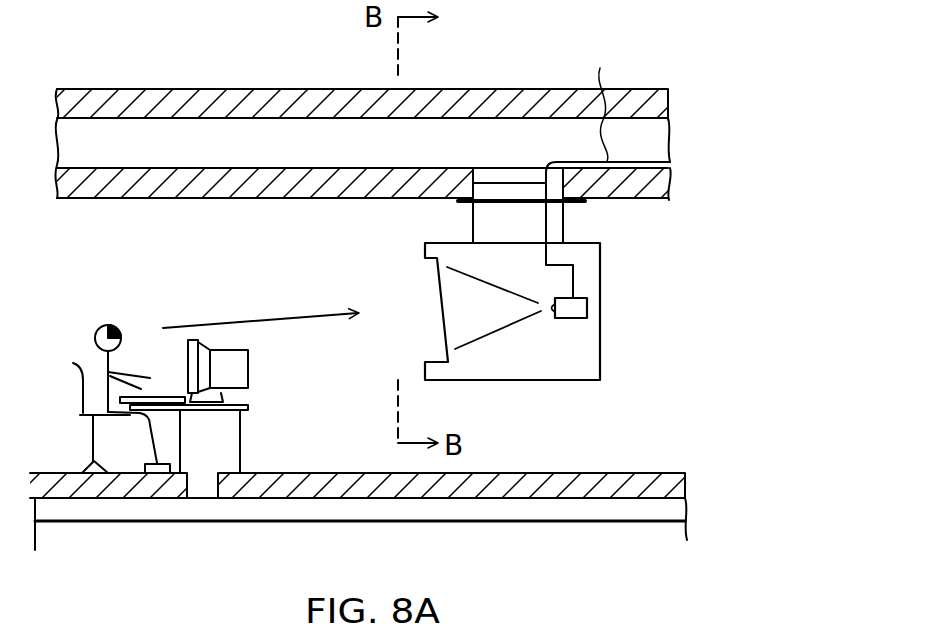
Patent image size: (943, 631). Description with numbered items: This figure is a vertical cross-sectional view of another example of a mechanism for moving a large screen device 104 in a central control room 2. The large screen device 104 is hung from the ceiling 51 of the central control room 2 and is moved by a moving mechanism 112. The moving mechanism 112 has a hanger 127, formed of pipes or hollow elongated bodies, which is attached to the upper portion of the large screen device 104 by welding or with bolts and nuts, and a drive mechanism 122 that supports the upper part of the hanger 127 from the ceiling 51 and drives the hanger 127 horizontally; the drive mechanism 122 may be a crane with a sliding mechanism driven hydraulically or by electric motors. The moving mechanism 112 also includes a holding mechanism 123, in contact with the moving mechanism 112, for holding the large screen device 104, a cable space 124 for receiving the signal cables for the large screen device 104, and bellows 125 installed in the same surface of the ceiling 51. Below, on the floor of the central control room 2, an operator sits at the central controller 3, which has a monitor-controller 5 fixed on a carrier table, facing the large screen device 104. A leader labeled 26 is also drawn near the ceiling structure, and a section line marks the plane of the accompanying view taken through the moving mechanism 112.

The central control room 2 is at (722, 437).
The central controller 3 is at (268, 420).
The monitor-controller 5 is at (249, 376).
The cover member 26 is at (610, 98).
The ceiling 51 is at (228, 199).
The large screen device 104 is at (600, 365).
The moving mechanism 112 is at (763, 119).
The drive mechanism 122 is at (587, 203).
The holding mechanism 123 is at (648, 168).
The cable space 124 is at (628, 137).
The bellows 125 is at (530, 205).
The hanger 127 is at (560, 212).